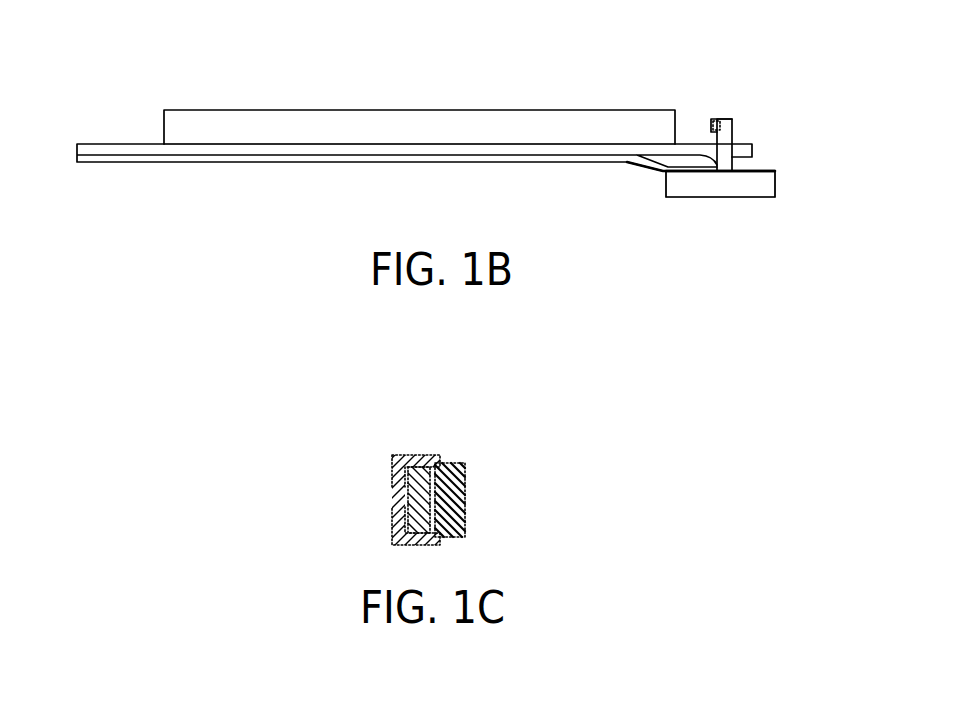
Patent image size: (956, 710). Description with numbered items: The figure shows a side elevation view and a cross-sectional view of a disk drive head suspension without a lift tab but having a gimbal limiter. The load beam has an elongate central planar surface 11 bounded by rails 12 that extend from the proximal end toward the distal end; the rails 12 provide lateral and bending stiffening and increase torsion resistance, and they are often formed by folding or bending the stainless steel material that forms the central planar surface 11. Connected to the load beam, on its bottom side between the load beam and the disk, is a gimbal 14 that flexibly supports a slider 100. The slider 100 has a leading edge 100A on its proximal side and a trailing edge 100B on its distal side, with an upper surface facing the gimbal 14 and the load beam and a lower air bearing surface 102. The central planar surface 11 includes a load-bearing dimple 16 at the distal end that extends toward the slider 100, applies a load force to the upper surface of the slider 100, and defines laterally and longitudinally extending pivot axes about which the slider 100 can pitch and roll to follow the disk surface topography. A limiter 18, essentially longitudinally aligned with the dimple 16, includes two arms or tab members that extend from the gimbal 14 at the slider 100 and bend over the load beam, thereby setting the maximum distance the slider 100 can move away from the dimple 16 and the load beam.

In FIG. 1B, the central planar surface 11 is at (271, 143).
In FIG. 1B, the rails 12 is at (386, 110).
In FIG. 1B, the gimbal 14 is at (323, 163).
In FIG. 1B, the load-bearing dimple 16 is at (716, 153).
In FIG. 1C, the load-bearing dimple 16 is at (416, 492).
In FIG. 1B, the limiter 18 is at (728, 127).
In FIG. 1C, the limiter 18 is at (430, 457).
In FIG. 1B, the slider 100 is at (745, 198).
In FIG. 1C, the slider 100 is at (466, 497).
In FIG. 1B, the leading edge 100A is at (665, 183).
In FIG. 1B, the trailing edge 100B is at (776, 185).
In FIG. 1B, the air bearing surface 102 is at (698, 198).